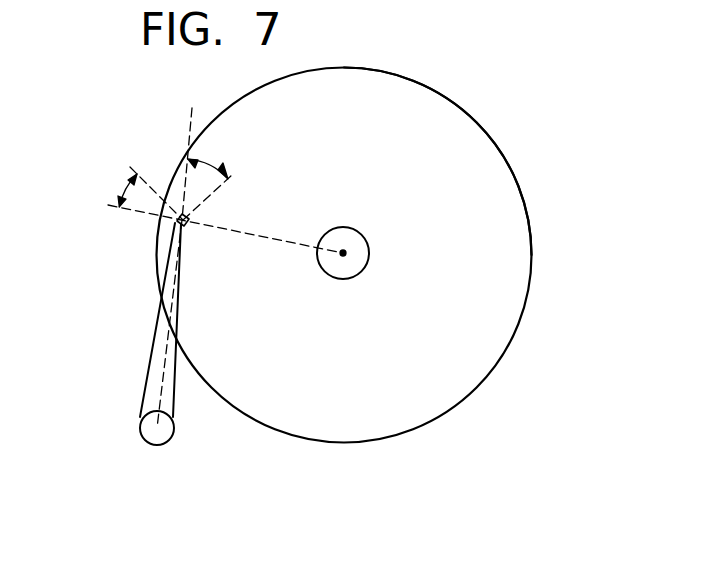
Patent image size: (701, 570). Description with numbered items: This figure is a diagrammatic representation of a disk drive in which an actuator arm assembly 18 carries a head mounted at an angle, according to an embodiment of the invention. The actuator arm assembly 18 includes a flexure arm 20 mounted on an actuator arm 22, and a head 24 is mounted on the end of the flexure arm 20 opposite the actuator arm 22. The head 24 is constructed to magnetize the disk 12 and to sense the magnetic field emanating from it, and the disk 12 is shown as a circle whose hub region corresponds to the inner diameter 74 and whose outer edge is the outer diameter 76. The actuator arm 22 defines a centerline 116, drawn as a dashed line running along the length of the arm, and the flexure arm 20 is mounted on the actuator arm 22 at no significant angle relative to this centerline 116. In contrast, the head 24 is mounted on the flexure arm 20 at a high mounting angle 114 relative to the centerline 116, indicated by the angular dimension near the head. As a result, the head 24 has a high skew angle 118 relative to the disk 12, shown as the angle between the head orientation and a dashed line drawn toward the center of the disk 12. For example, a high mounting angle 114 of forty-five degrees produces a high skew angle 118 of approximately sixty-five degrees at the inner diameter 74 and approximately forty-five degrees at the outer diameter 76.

The disk 12 is at (384, 168).
The actuator arm assembly 18 is at (167, 276).
The flexure arm 20 is at (181, 257).
The actuator arm 22 is at (140, 395).
The head 24 is at (187, 218).
The inner diameter 74 is at (370, 249).
The outer diameter 76 is at (490, 137).
The high mounting angle 114 is at (203, 163).
The centerline 116 is at (165, 362).
The high skew angle 118 is at (127, 187).